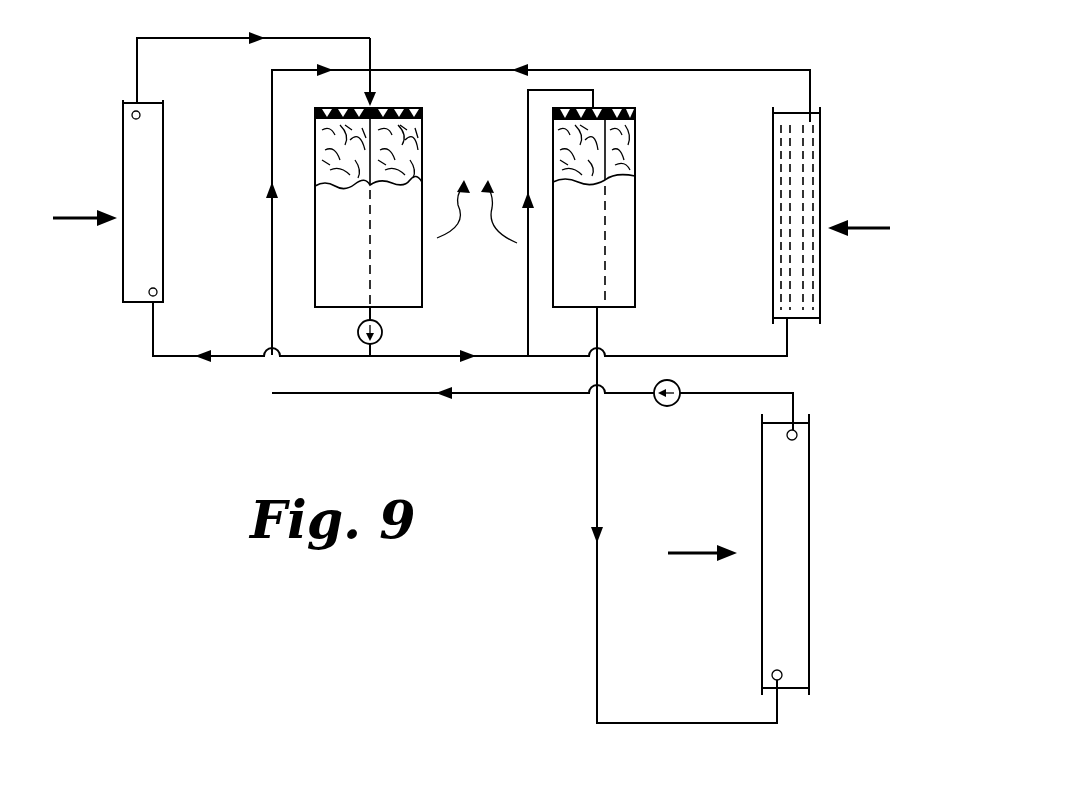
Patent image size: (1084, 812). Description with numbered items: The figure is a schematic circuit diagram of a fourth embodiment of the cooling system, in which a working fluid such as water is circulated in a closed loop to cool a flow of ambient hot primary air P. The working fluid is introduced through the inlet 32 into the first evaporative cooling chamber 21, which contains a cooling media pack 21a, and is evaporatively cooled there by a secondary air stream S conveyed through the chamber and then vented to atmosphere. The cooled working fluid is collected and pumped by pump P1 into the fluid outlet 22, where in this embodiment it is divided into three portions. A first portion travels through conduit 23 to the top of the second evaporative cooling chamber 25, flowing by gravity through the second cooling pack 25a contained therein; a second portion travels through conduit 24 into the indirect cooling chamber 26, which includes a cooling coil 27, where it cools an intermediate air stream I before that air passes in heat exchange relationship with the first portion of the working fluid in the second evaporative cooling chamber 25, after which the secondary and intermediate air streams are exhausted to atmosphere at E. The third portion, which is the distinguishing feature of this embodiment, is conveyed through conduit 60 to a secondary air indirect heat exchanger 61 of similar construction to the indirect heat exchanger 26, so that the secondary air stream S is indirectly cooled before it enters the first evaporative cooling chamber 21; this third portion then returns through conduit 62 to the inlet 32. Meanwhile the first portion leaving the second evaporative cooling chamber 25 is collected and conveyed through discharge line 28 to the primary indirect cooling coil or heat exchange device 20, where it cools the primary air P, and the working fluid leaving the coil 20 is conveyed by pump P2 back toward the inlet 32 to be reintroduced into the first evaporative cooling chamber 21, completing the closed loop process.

The primary indirect cooling coil 20 is at (817, 480).
The first evaporative cooling chamber 21 is at (387, 193).
The cooling media pack 21a is at (423, 138).
The fluid outlet 22 is at (410, 356).
The conduit 23 is at (528, 268).
The conduit 24 is at (725, 357).
The second evaporative cooling chamber 25 is at (631, 206).
The second cooling pack 25a is at (637, 132).
The indirect cooling chamber 26 is at (792, 215).
The cooling coil 27 is at (776, 205).
The discharge line 28 is at (597, 449).
The inlet 32 is at (376, 92).
The conduit 60 is at (150, 324).
The secondary air indirect heat exchanger 61 is at (168, 178).
The conduit 62 is at (207, 12).
The pump P1 is at (357, 332).
The pump P2 is at (670, 406).
The secondary air stream S is at (78, 213).
The exhaust E is at (477, 218).
The intermediate air stream I is at (882, 224).
The primary air P is at (690, 548).